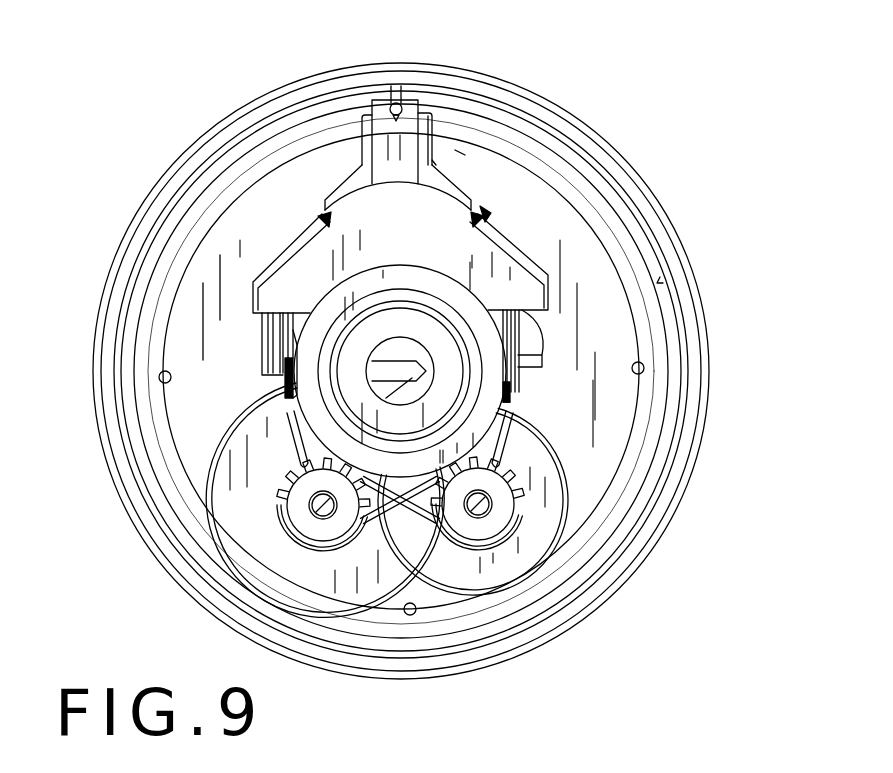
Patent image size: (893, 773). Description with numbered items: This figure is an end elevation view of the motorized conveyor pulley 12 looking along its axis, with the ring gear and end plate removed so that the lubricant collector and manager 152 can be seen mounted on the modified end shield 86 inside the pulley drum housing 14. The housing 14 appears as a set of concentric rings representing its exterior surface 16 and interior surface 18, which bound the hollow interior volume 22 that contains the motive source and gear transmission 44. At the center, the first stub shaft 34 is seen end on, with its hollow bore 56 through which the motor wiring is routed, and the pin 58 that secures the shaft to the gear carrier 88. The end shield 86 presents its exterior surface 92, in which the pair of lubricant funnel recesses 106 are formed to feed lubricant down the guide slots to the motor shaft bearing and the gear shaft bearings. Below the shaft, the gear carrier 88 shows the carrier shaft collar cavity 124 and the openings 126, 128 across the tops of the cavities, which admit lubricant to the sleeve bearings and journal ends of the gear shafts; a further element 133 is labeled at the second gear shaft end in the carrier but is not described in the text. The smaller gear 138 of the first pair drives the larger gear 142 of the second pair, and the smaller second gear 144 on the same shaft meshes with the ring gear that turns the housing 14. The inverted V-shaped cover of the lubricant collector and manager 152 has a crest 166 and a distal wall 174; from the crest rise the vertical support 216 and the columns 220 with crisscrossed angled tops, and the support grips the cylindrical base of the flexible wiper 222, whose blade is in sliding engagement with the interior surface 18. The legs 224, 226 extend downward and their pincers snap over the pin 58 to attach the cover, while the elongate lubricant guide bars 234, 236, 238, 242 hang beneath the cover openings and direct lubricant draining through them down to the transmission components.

The motorized conveyor pulley 12 is at (608, 107).
The pulley drum housing 14 is at (642, 177).
The exterior surface 16 is at (677, 235).
The interior surface 18 is at (660, 277).
The hollow interior volume 22 is at (615, 342).
The first stub shaft 34 is at (320, 218).
The gear transmission 44 is at (202, 408).
The hollow bore 56 is at (425, 383).
The pin 58 is at (481, 208).
The modified end shield 86 is at (460, 152).
The gear carrier 88 is at (247, 107).
The exterior surface 92 is at (197, 287).
The lubricant funnel recesses 106 is at (313, 257).
The carrier shaft collar cavity 124 is at (320, 503).
The openings 126 is at (512, 468).
The openings 128 is at (205, 512).
The right gear shaft 133 is at (485, 512).
The smaller gear of the first pair 138 is at (563, 498).
The larger gear of the second pair 142 is at (204, 500).
The smaller second gear 144 is at (273, 530).
The lubricant collector and manager 152 is at (333, 175).
The crest 166 is at (435, 163).
The distal wall 174 is at (273, 290).
The vertical support 216 is at (376, 98).
The columns 220 is at (363, 163).
The flexible wiper 222 is at (405, 88).
The leg 224 is at (293, 375).
The leg 226 is at (520, 342).
The lubricant guide bar 234 is at (280, 337).
The lubricant guide bar 236 is at (293, 330).
The lubricant guide bar 238 is at (287, 464).
The lubricant guide bar 242 is at (540, 356).